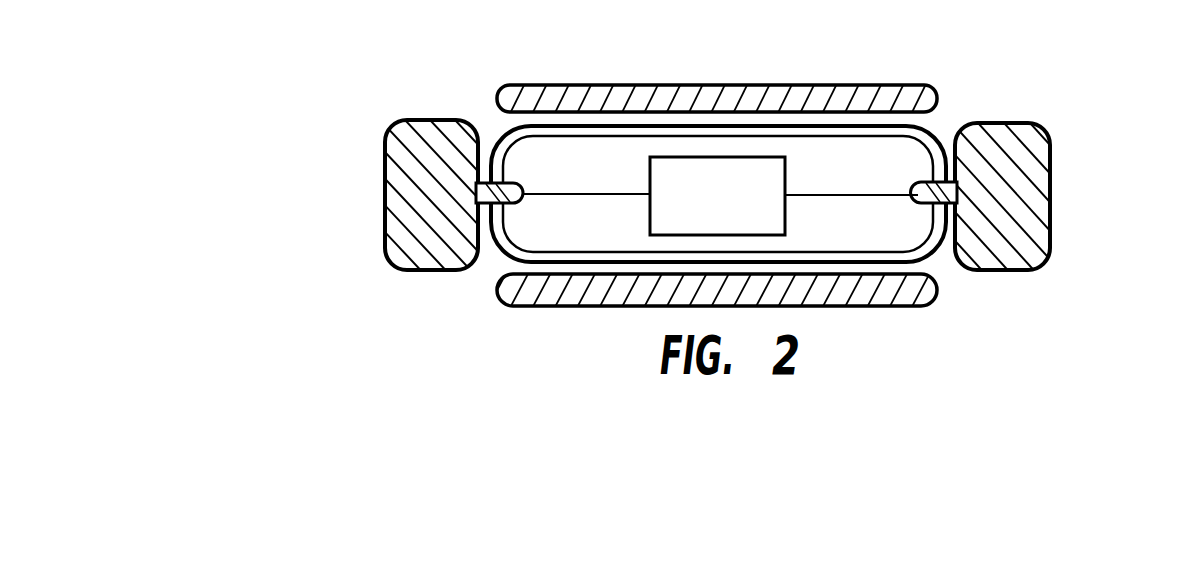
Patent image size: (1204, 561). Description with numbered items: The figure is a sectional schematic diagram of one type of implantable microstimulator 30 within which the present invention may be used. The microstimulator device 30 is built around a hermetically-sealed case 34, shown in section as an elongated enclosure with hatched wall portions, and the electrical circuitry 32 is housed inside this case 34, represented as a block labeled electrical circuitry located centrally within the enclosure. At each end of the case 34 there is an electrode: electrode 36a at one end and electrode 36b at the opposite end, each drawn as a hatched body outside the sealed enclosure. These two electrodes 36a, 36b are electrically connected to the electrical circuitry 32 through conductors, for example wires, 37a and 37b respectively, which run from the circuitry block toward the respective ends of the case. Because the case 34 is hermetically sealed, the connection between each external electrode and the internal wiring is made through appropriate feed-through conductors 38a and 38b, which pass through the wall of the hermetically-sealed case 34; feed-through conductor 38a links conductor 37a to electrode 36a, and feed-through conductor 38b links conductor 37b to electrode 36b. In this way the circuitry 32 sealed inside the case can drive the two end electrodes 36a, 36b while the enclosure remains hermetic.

The implantable microstimulator 30 is at (348, 99).
The electrical circuitry 32 is at (766, 157).
The hermetically-sealed case 34 is at (836, 85).
The electrode 36a is at (1052, 197).
The electrode 36b is at (387, 181).
The conductor 37a is at (844, 197).
The conductor 37b is at (604, 192).
The feed-through conductor 38a is at (912, 205).
The feed-through conductor 38b is at (510, 204).